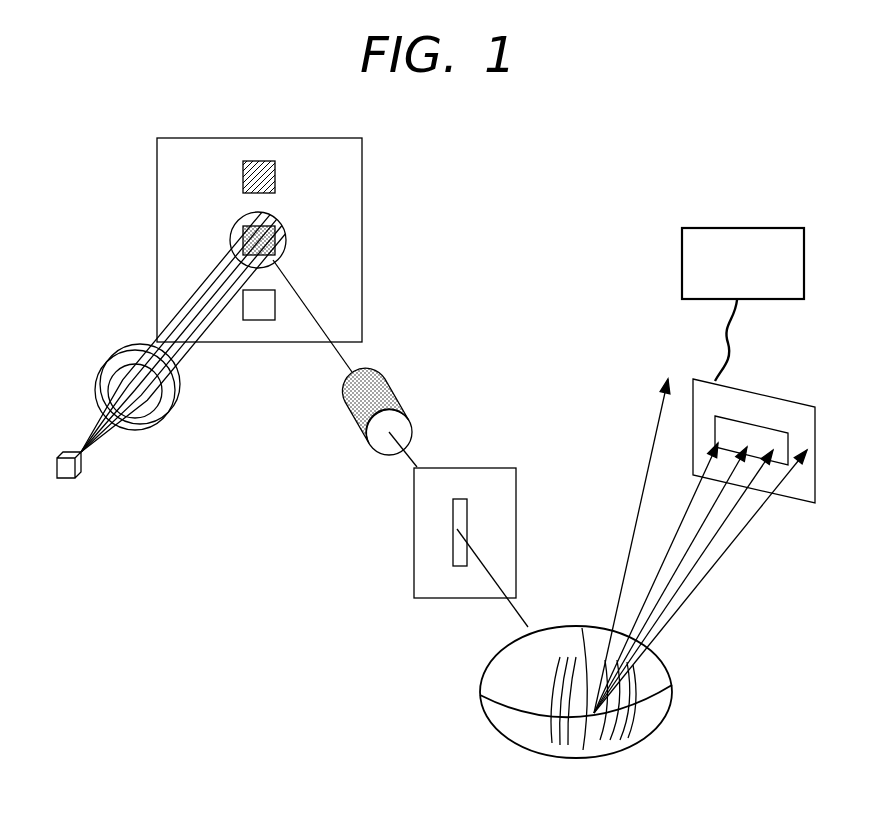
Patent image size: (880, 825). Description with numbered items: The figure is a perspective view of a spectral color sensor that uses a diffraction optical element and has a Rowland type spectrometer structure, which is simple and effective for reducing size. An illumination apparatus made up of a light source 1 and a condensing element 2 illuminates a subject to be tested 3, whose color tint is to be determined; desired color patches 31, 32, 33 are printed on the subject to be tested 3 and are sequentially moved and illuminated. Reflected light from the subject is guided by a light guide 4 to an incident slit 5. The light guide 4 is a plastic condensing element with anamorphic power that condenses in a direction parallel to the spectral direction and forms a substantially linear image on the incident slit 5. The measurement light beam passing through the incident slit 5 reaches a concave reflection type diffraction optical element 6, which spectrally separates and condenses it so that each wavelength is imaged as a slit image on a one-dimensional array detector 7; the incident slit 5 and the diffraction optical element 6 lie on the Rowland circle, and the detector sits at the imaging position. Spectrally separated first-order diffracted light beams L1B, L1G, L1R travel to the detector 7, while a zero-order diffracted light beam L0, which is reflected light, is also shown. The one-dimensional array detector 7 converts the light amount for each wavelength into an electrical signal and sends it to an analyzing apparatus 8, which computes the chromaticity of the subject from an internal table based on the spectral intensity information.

The light source 1 is at (60, 453).
The condensing element 2 is at (112, 356).
The subject to be tested 3 is at (362, 151).
The color patch 31 is at (275, 175).
The color patch 32 is at (286, 238).
The color patch 33 is at (275, 297).
The light guide 4 is at (392, 385).
The incident slit 5 is at (480, 468).
The concave reflection type diffraction optical element 6 is at (567, 628).
The one-dimensional array detector 7 is at (775, 393).
The analyzing apparatus 8 is at (751, 285).
The zero-order diffracted light beam L0 is at (630, 563).
The first-order diffracted light beam L1B is at (682, 537).
The first-order diffracted light beam L1G is at (712, 518).
The first-order diffracted light beam L1R is at (743, 502).